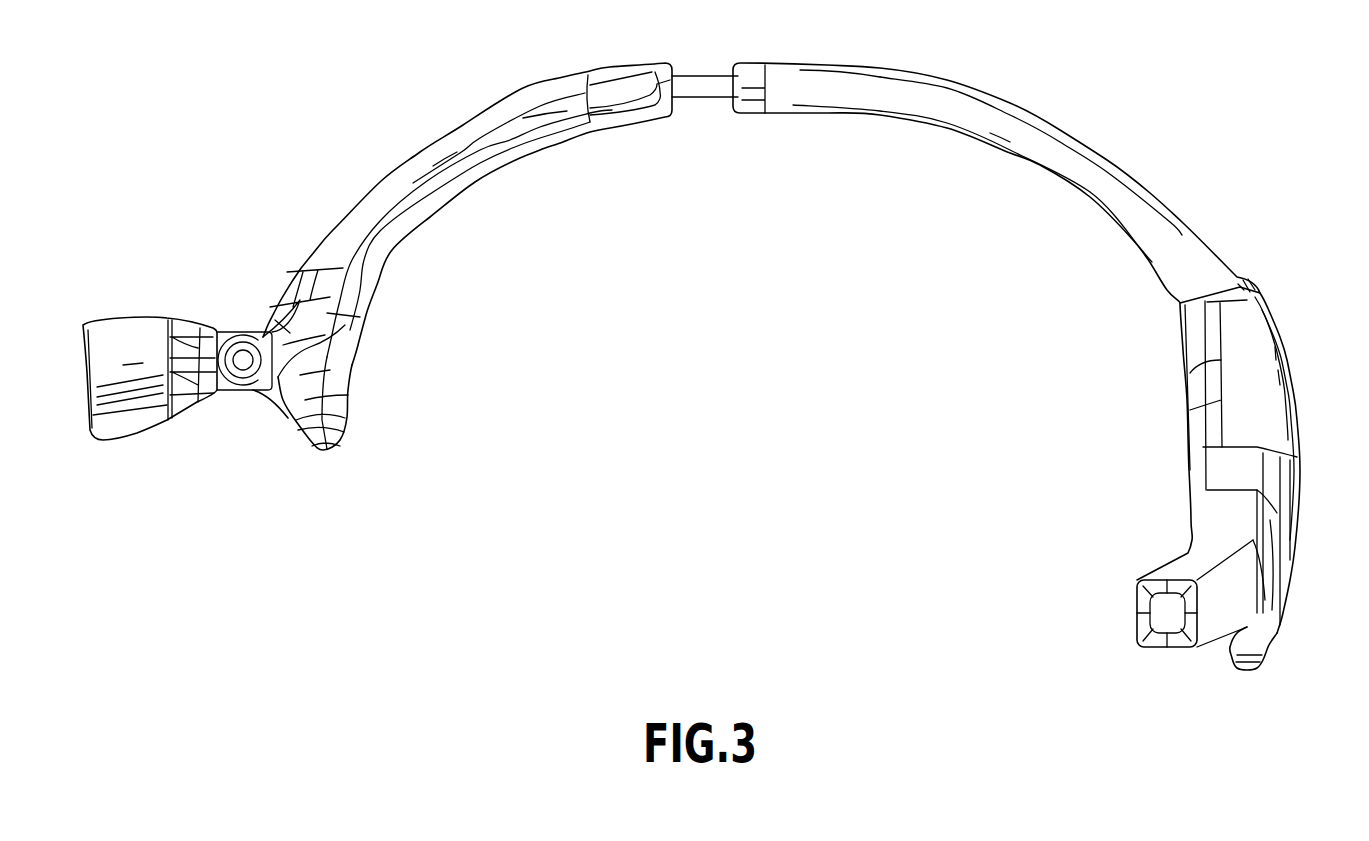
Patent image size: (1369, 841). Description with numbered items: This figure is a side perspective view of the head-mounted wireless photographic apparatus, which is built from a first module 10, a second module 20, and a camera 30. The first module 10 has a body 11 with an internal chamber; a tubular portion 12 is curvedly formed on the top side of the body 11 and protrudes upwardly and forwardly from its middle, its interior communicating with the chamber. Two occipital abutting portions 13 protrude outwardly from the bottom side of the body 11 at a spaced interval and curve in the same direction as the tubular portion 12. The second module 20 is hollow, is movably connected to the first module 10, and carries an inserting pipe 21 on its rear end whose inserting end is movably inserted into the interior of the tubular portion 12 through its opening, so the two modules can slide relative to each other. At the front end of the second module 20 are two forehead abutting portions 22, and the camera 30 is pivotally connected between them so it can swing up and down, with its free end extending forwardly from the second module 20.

The first module 10 is at (1133, 148).
The body 11 is at (1273, 390).
The tubular portion 12 is at (938, 103).
The occipital abutting portions 13 is at (1190, 565).
The second module 20 is at (397, 143).
The inserting pipe 21 is at (703, 78).
The forehead abutting portions 22 is at (305, 417).
The camera 30 is at (135, 300).